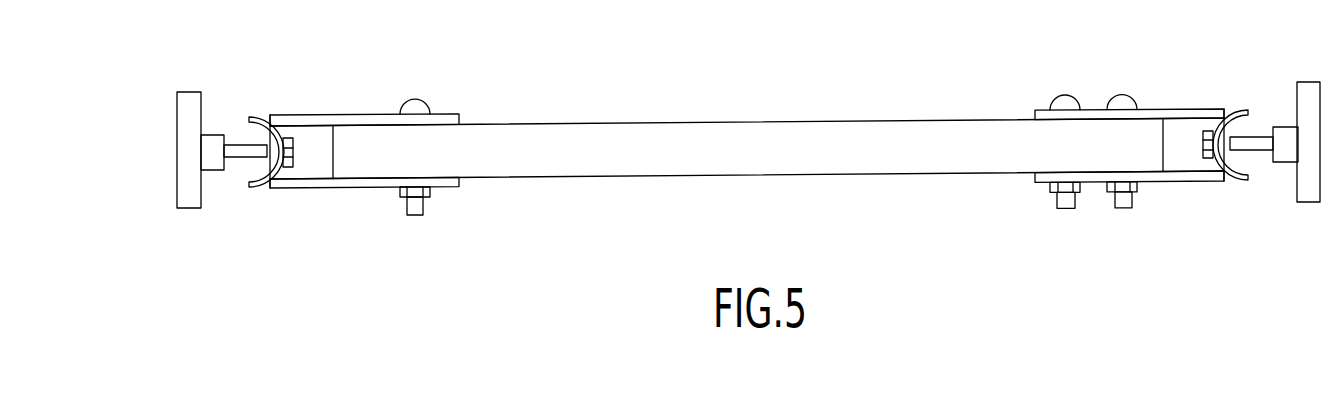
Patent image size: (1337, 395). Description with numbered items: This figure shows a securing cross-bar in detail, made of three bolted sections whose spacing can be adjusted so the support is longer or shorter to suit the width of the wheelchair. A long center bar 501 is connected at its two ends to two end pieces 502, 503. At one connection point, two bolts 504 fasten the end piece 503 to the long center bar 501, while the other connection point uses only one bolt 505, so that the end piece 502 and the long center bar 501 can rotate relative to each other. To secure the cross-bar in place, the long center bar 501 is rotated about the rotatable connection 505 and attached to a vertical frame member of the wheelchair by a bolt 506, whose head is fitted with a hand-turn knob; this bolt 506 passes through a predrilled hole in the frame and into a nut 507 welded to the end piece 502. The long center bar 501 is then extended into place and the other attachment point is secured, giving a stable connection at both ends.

The long center bar 501 is at (832, 175).
The end piece 502 is at (331, 115).
The end piece 503 is at (1090, 109).
The bolts 504 is at (1067, 208).
The bolt 505 is at (418, 109).
The bolt 506 is at (180, 175).
The nut 507 is at (295, 147).